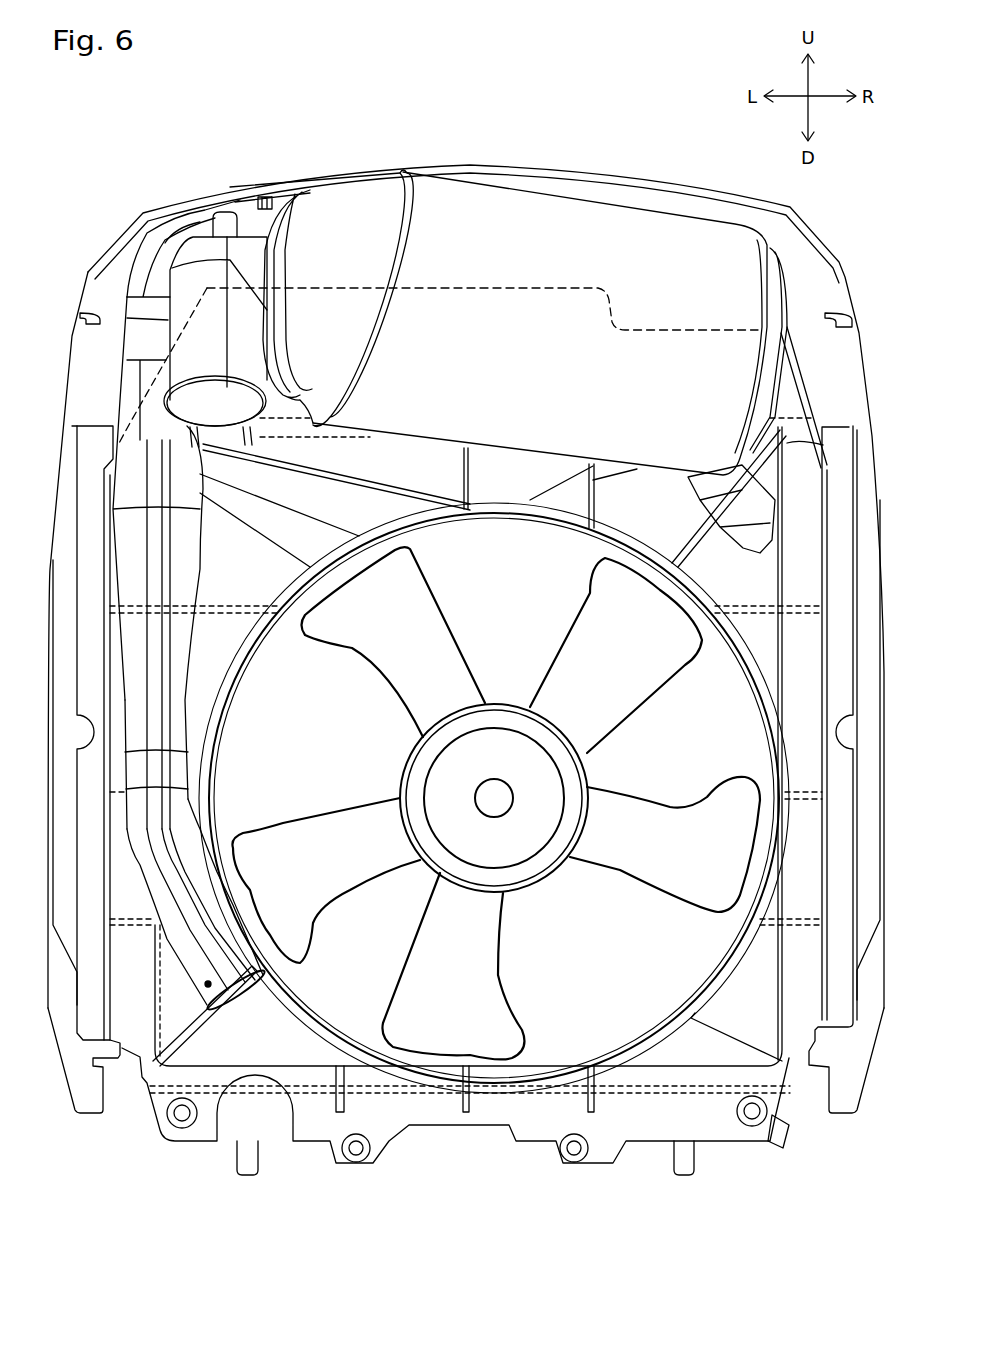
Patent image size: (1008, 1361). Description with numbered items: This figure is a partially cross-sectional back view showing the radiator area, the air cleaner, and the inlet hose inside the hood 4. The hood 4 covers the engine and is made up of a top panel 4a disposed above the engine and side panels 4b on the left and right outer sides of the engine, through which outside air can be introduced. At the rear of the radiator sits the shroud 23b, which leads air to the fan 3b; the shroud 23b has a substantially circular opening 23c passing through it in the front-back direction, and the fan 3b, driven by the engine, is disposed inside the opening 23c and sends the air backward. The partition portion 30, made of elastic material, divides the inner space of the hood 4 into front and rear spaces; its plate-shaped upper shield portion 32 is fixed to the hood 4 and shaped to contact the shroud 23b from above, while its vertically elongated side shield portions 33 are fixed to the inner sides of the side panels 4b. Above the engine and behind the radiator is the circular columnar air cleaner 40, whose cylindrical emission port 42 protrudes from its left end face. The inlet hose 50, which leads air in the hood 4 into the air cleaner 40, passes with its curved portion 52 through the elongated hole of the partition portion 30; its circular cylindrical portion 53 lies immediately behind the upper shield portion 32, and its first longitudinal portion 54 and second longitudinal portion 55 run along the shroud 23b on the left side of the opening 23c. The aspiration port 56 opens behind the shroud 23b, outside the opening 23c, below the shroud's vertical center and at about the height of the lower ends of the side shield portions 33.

The fan 3b is at (446, 1041).
The hood 4 is at (648, 177).
The top panel 4a is at (712, 190).
The side panels 4b is at (60, 441).
The shroud 23b is at (648, 1115).
The opening 23c is at (568, 1058).
The partition portion 30 is at (113, 243).
The upper shield portion 32 is at (80, 383).
The side shield portions 33 is at (83, 763).
The air cleaner 40 is at (536, 187).
The emission port 42 is at (187, 320).
The inlet hose 50 is at (143, 243).
The curved portion 52 is at (180, 237).
The circular cylindrical portion 53 is at (138, 337).
The first longitudinal portion 54 is at (123, 543).
The second longitudinal portion 55 is at (147, 865).
The aspiration port 56 is at (256, 995).